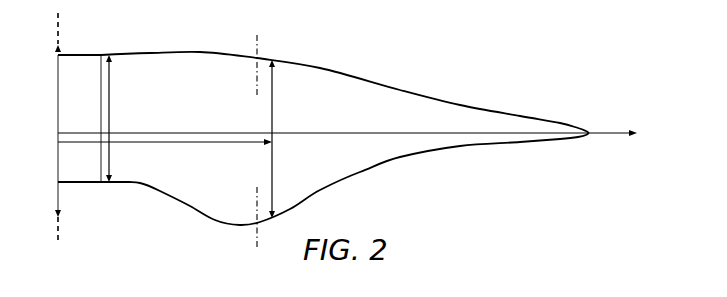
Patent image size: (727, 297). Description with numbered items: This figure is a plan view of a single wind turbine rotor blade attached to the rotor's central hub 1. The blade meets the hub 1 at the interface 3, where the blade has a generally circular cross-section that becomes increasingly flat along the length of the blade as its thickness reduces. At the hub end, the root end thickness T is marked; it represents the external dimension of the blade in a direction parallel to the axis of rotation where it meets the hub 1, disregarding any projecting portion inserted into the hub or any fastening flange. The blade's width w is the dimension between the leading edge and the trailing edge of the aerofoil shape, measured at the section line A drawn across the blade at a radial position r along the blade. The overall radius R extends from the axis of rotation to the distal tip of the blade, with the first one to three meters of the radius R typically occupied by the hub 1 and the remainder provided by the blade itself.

The central hub 1 is at (86, 55).
The interface 3 is at (101, 80).
The root end thickness T is at (115, 118).
The radial position dimension r is at (165, 148).
The width w is at (280, 139).
The radius R is at (358, 136).
The section line A- A is at (251, 35).